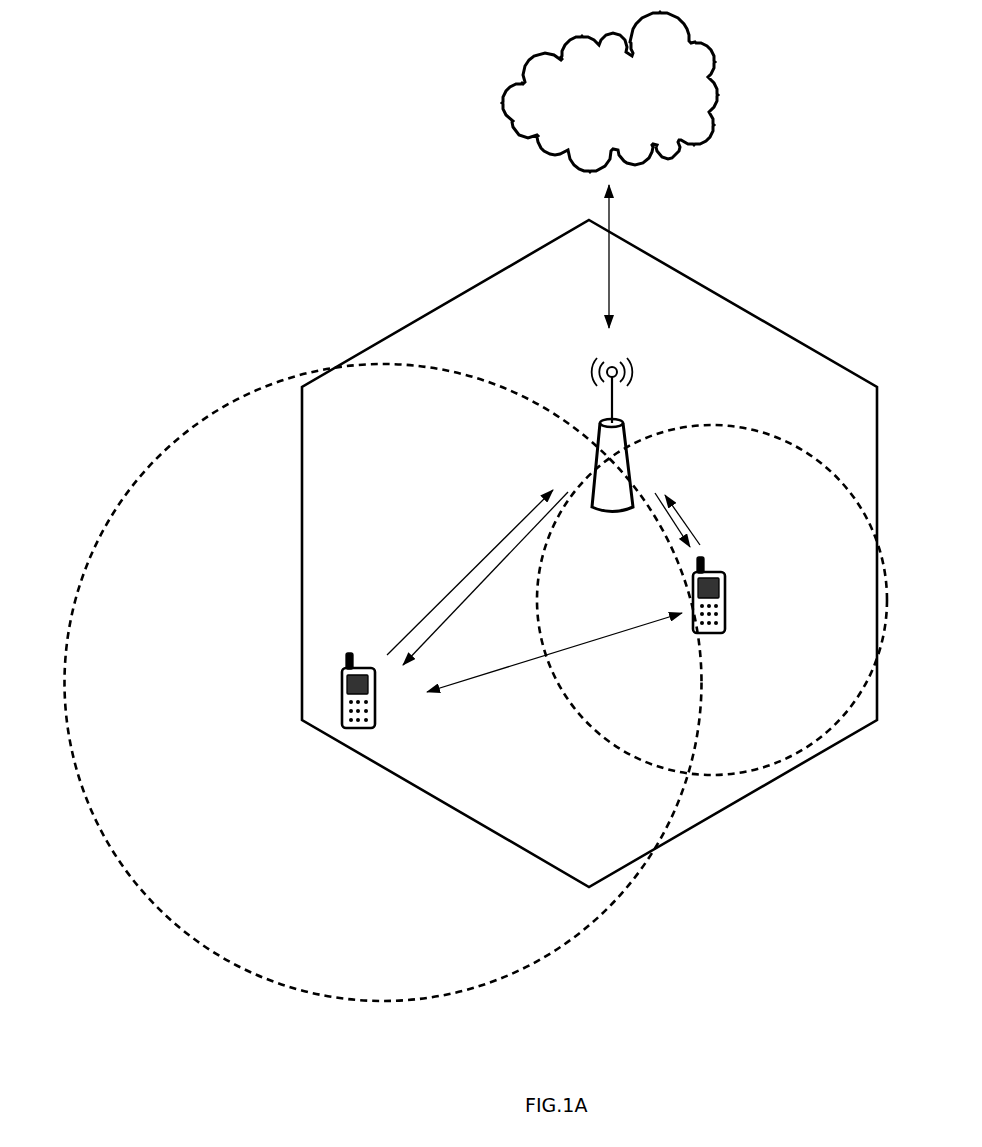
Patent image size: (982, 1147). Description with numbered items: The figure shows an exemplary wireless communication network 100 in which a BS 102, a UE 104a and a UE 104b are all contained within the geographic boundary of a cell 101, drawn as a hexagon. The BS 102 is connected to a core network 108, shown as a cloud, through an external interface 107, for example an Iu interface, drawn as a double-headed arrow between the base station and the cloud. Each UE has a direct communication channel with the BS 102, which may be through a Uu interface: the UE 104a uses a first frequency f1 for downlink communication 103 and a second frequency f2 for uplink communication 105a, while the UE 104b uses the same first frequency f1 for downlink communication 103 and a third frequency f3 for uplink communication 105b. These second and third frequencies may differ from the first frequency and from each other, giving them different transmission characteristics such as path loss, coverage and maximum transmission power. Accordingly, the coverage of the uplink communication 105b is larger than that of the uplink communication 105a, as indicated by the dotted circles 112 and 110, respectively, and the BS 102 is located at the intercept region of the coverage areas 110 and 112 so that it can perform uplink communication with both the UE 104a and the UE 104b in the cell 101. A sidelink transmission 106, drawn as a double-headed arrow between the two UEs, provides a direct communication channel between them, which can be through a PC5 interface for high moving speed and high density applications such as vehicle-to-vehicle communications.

The wireless communication network 100 is at (122, 89).
The cell 101 is at (478, 822).
The BS 102 is at (628, 410).
The downlink communication 103 is at (476, 682).
The UE 104a is at (722, 573).
The UE 104b is at (357, 650).
The uplink communication 105a is at (700, 532).
The uplink communication 105b is at (457, 580).
The sidelink transmission 106 is at (480, 680).
The external interface 107 is at (650, 200).
The core network 108 is at (537, 80).
The coverage area 110 is at (833, 730).
The coverage area 112 is at (143, 483).